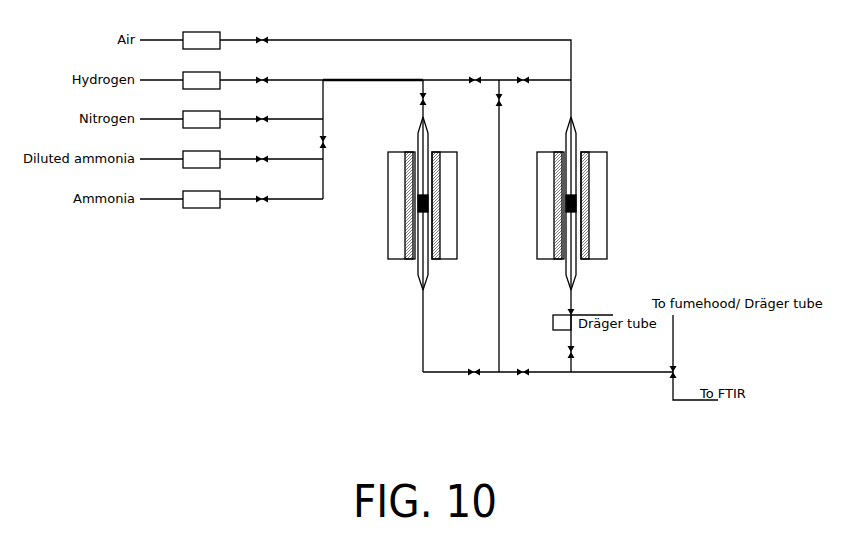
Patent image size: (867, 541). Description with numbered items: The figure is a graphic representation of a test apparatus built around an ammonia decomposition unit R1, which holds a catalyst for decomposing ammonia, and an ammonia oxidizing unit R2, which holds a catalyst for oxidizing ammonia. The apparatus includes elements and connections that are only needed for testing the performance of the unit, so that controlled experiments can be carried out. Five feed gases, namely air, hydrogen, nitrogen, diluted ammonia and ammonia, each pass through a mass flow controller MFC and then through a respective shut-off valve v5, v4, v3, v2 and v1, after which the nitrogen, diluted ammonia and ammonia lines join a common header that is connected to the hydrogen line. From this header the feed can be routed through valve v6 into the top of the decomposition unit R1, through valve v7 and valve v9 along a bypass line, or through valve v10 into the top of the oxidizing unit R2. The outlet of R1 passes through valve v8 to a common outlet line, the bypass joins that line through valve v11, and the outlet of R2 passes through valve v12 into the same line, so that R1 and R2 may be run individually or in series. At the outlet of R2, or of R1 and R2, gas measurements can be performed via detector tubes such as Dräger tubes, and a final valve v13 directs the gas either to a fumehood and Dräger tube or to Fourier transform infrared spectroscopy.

The valve v1 (ammonia line) v1 is at (264, 208).
The valve v2 (diluted ammonia line) v2 is at (264, 168).
The valve v3 (nitrogen line) v3 is at (264, 128).
The valve v4 (hydrogen line) v4 is at (264, 89).
The valve v5 (air line) v5 is at (264, 49).
The valve v6 (R1 inlet) v6 is at (433, 99).
The valve v7 is at (473, 72).
The valve v8 (R1 outlet) v8 is at (475, 363).
The valve v9 (bypass) v9 is at (509, 99).
The valve v10 (R2 inlet) v10 is at (525, 72).
The valve v11 is at (527, 363).
The valve v12 (R2 outlet) v12 is at (586, 352).
The valve v13 (to FTIR) v13 is at (686, 372).
The ammonia decomposition unit R1 is at (422, 203).
The ammonia oxidizing unit R2 is at (571, 203).
The mass flow controller MFC is at (201, 120).